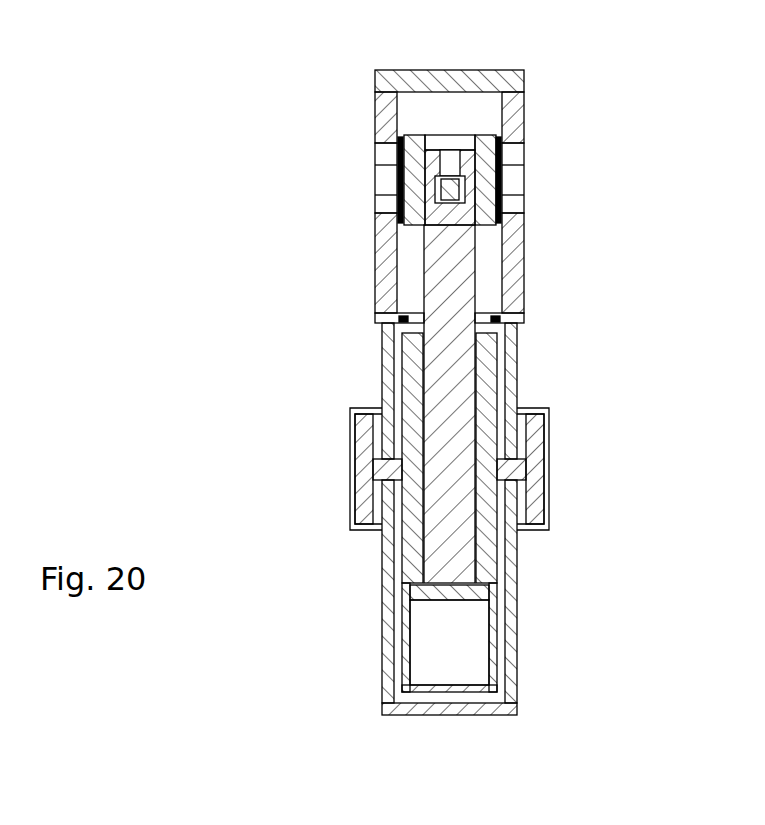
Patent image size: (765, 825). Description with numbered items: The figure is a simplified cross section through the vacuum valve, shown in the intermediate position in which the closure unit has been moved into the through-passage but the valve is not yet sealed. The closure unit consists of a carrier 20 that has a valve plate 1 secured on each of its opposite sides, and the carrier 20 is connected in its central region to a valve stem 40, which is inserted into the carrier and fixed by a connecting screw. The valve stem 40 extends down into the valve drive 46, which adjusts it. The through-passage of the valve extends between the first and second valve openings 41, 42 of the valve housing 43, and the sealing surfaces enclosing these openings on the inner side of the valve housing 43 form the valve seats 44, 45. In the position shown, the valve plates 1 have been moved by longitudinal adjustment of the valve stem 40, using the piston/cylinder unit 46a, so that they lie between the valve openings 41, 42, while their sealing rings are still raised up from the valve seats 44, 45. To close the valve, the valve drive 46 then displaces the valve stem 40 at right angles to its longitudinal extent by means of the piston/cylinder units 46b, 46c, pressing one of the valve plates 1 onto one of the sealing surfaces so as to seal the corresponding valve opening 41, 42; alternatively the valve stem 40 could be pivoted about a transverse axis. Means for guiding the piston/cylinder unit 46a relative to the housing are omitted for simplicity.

The valve plate 1 is at (412, 117).
The carrier 20 is at (440, 140).
The valve stem 40 is at (450, 265).
The first valve opening 41 is at (386, 180).
The second valve opening 42 is at (518, 155).
The valve housing 43 is at (386, 110).
The valve seat 44 is at (401, 230).
The valve seat 45 is at (497, 227).
The valve drive 46 is at (553, 452).
The piston/cylinder unit 46a is at (423, 620).
The piston/cylinder unit 46b is at (362, 497).
The piston/cylinder unit 46c is at (535, 515).